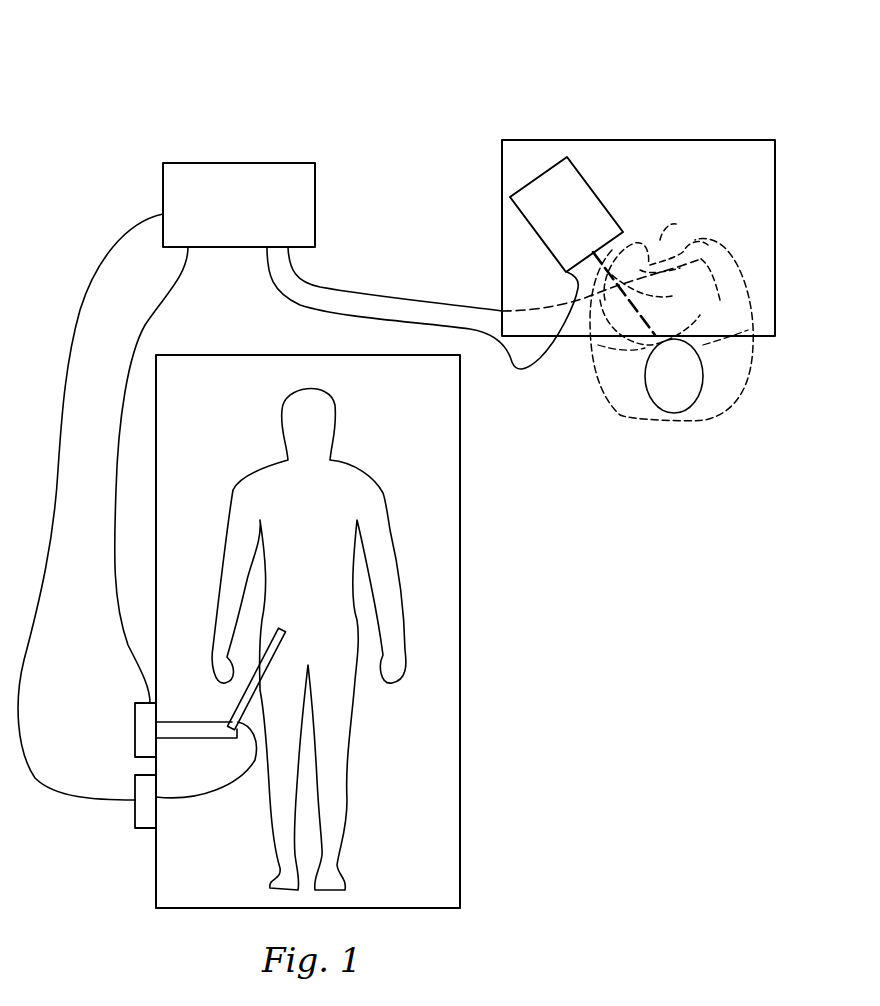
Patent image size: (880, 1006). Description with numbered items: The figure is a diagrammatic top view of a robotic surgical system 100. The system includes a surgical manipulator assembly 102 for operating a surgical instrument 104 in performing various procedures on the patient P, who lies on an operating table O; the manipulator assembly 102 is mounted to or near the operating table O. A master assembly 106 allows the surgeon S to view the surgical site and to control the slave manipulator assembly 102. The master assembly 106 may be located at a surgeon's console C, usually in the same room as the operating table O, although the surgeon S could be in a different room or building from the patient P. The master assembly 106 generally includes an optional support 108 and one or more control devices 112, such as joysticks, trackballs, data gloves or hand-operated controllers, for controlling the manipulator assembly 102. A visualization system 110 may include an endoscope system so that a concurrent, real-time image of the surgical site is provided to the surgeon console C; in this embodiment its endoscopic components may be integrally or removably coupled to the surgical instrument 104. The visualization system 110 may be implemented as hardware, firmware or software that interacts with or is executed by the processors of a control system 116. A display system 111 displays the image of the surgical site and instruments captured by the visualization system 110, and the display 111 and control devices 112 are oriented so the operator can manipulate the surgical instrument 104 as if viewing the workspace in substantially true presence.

The robotic surgical system 100 is at (319, 68).
The surgical manipulator assembly 102 is at (126, 742).
The surgical instrument 104 is at (287, 640).
The master assembly 106 is at (616, 118).
The support 108 is at (638, 215).
The visualization system 110 is at (133, 813).
The display system 111 is at (548, 185).
The control device 112 is at (688, 242).
The control system 116 is at (231, 172).
The surgeon's console C is at (672, 146).
The surgeon S is at (712, 421).
The patient P is at (352, 478).
The operating table O is at (460, 632).